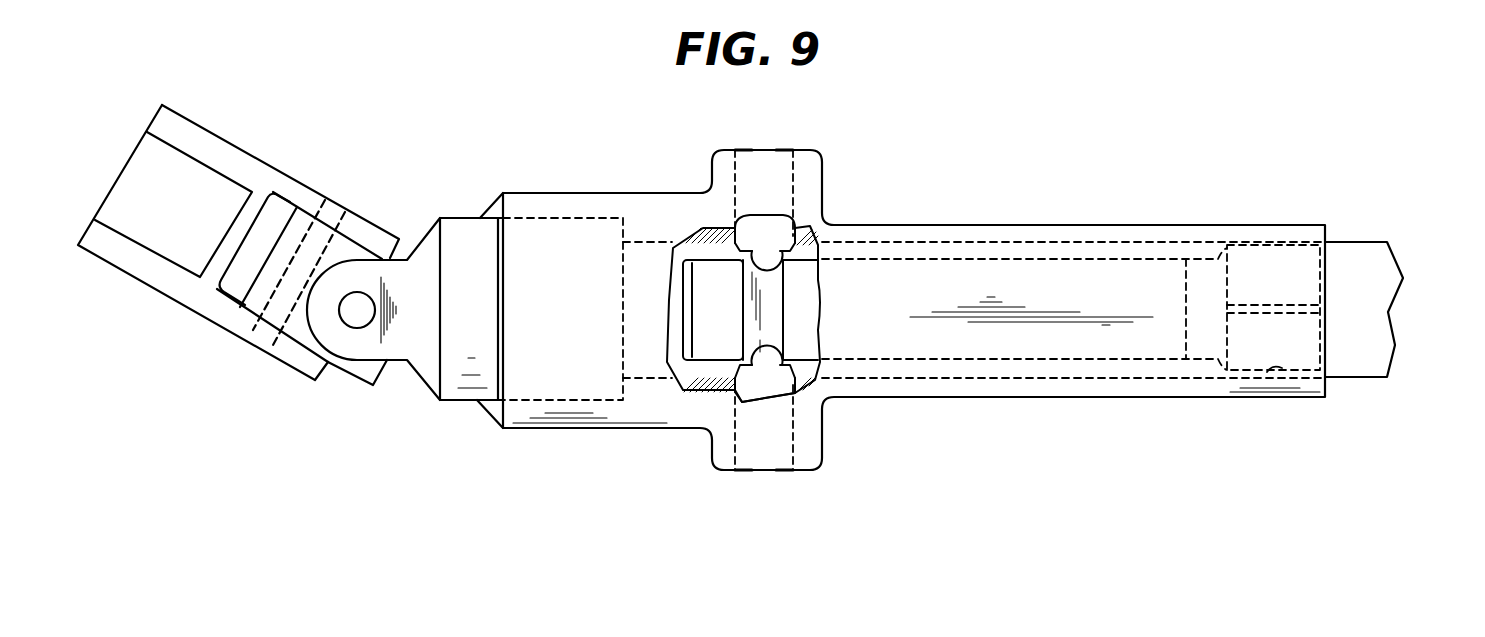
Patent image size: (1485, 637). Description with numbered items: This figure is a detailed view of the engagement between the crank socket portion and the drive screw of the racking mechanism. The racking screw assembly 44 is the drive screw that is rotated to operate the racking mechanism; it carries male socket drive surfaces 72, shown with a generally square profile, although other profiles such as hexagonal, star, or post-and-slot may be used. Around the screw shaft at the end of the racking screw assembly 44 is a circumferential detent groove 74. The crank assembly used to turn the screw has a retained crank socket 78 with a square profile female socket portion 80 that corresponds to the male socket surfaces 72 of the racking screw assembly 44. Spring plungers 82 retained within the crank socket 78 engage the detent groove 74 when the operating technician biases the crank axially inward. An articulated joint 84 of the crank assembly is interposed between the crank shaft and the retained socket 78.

The racking screw assembly 44 is at (1408, 365).
The male socket drive surfaces 72 is at (1282, 267).
The detent groove 74 is at (767, 310).
The retained crank socket 78 is at (638, 193).
The female socket portion 80 is at (1283, 378).
The spring plungers 82 is at (803, 185).
The articulated joint 84 is at (339, 391).